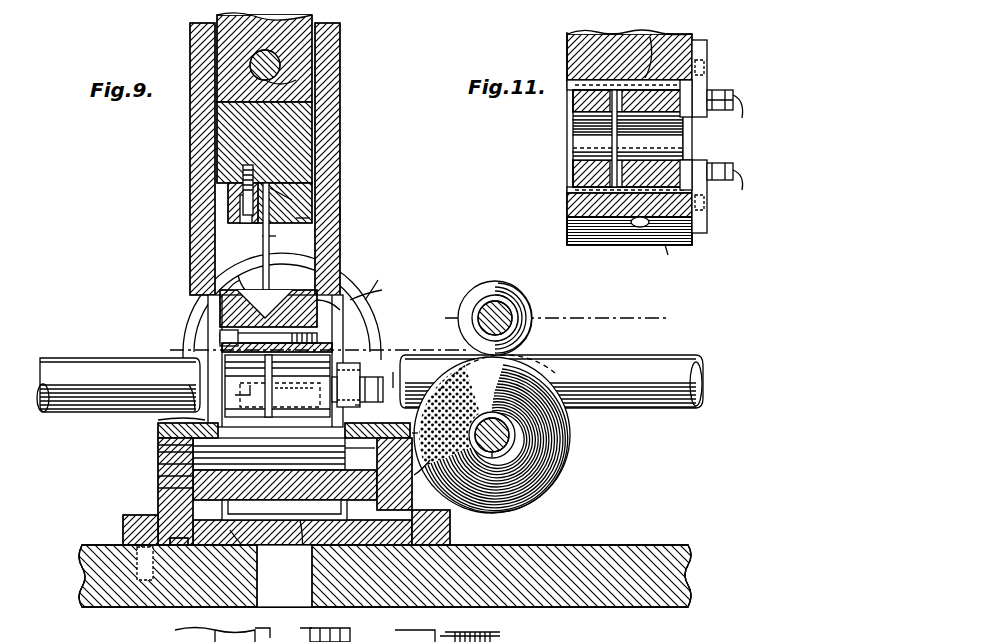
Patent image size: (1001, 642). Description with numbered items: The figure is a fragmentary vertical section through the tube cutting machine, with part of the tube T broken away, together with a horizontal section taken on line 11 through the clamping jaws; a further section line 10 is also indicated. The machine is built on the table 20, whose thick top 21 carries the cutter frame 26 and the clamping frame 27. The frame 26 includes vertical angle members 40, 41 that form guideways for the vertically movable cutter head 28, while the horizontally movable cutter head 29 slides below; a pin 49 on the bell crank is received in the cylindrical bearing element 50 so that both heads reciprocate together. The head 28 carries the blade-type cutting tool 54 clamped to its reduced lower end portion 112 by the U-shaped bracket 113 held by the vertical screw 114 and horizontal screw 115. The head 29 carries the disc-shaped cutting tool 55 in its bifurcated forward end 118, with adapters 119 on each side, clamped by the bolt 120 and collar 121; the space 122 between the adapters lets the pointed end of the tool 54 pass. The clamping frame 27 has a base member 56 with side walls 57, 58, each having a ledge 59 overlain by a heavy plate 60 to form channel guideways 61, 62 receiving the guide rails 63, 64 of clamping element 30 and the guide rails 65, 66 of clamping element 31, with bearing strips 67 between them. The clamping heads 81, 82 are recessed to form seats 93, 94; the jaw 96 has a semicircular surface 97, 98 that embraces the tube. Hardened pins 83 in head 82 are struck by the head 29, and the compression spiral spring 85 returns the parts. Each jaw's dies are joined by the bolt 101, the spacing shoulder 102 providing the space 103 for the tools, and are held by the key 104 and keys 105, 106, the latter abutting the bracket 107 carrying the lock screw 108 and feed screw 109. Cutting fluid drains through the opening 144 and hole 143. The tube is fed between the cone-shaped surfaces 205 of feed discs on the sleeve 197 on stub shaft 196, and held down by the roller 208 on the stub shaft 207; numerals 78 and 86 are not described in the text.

In FIG. 9, the rectangular table 20 is at (666, 542).
In FIG. 9, the table top 21 is at (606, 607).
In FIG. 9, the cutter frame 26 is at (351, 214).
In FIG. 9, the clamping frame 27 is at (124, 524).
In FIG. 9, the vertically movable tube cutter head 28 is at (296, 138).
In FIG. 9, the horizontally movable tube cutter head 29 is at (376, 289).
In FIG. 9, the tube-clamping element 30 is at (301, 545).
In FIG. 11, the tube-clamping element 30 is at (592, 230).
In FIG. 9, the tube-clamping element 31 is at (170, 418).
In FIG. 11, the tube-clamping element 31 is at (567, 42).
In FIG. 9, the angle member 40 is at (198, 153).
In FIG. 9, the angle member 41 is at (330, 158).
In FIG. 9, the pin 49 is at (278, 58).
In FIG. 9, the cylindrical bearing element 50 is at (296, 80).
In FIG. 9, the cutting tool 54 is at (272, 236).
In FIG. 9, the cutting tool 55 is at (317, 312).
In FIG. 9, the base member 56 is at (160, 510).
In FIG. 9, the side wall 57 is at (160, 453).
In FIG. 9, the side wall 58 is at (398, 493).
In FIG. 9, the ledge 59 is at (257, 557).
In FIG. 9, the heavy plate 60 is at (165, 432).
In FIG. 9, the channel guideway 61 is at (160, 466).
In FIG. 9, the channel guideway 62 is at (412, 470).
In FIG. 9, the guide rail 63 is at (160, 478).
In FIG. 9, the guide rail 64 is at (440, 527).
In FIG. 9, the guide rail 65 is at (160, 445).
In FIG. 9, the guide rail 66 is at (404, 432).
In FIG. 9, the bearing strip 67 is at (160, 490).
In FIG. 9, the shaft 78 is at (405, 632).
In FIG. 11, the clamping head 81 is at (567, 210).
In FIG. 9, the clamping head 82 is at (222, 375).
In FIG. 11, the clamping head 82 is at (570, 64).
In FIG. 9, the hardened pin 83 is at (330, 274).
In FIG. 9, the compression spiral spring 85 is at (352, 632).
In FIG. 9, the guide arc 86 is at (379, 281).
In FIG. 11, the right-angled seat 93 is at (570, 176).
In FIG. 9, the right-angled seat 94 is at (268, 415).
In FIG. 11, the right-angled seat 94 is at (570, 97).
In FIG. 9, the jaw 96 is at (348, 363).
In FIG. 11, the semicircular surface 97 is at (685, 148).
In FIG. 9, the semicircular surface 98 is at (371, 377).
In FIG. 11, the semicircular surface 98 is at (712, 98).
In FIG. 9, the bolt 101 is at (250, 415).
In FIG. 11, the bolt 101 is at (570, 147).
In FIG. 9, the spacing shoulder 102 is at (304, 412).
In FIG. 11, the spacing shoulder 102 is at (573, 126).
In FIG. 9, the space 103 is at (236, 440).
In FIG. 11, the space 103 is at (618, 147).
In FIG. 9, the key 104 is at (320, 415).
In FIG. 11, the key 104 is at (571, 116).
In FIG. 11, the key 105 is at (595, 80).
In FIG. 11, the key 106 is at (648, 40).
In FIG. 9, the bracket 107 is at (340, 362).
In FIG. 11, the bracket 107 is at (700, 78).
In FIG. 9, the lock screw 108 is at (362, 407).
In FIG. 11, the lock screw 108 is at (716, 163).
In FIG. 11, the feed screw 109 is at (748, 175).
In FIG. 9, the reduced lower end portion 112 is at (303, 218).
In FIG. 9, the U-shaped bracket 113 is at (233, 212).
In FIG. 9, the vertical screw 114 is at (240, 172).
In FIG. 9, the horizontal screw 115 is at (286, 190).
In FIG. 9, the bifurcated forward end 118 is at (226, 292).
In FIG. 9, the adapter 119 is at (249, 295).
In FIG. 9, the bolt 120 is at (248, 290).
In FIG. 9, the collar 121 is at (373, 310).
In FIG. 9, the space 122 is at (268, 275).
In FIG. 9, the hole 143 is at (260, 600).
In FIG. 9, the opening 144 is at (272, 535).
In FIG. 9, the stub shaft 196 is at (498, 434).
In FIG. 9, the externally threaded sleeve 197 is at (494, 457).
In FIG. 9, the cone-shaped surface 205 is at (540, 480).
In FIG. 9, the stub shaft 207 is at (502, 312).
In FIG. 9, the roller 208 is at (500, 290).
In FIG. 9, the section line 10 is at (38, 359).
In FIG. 9, the section line 11 is at (176, 368).
In FIG. 9, the tube T is at (68, 412).